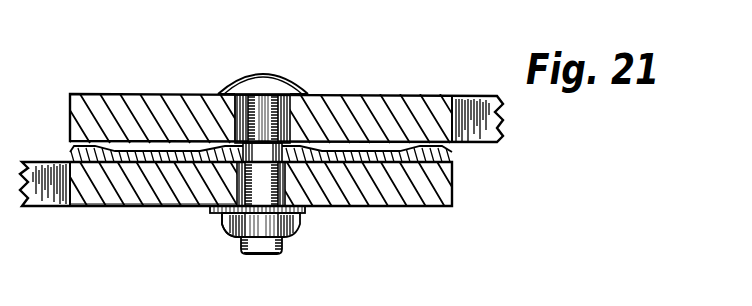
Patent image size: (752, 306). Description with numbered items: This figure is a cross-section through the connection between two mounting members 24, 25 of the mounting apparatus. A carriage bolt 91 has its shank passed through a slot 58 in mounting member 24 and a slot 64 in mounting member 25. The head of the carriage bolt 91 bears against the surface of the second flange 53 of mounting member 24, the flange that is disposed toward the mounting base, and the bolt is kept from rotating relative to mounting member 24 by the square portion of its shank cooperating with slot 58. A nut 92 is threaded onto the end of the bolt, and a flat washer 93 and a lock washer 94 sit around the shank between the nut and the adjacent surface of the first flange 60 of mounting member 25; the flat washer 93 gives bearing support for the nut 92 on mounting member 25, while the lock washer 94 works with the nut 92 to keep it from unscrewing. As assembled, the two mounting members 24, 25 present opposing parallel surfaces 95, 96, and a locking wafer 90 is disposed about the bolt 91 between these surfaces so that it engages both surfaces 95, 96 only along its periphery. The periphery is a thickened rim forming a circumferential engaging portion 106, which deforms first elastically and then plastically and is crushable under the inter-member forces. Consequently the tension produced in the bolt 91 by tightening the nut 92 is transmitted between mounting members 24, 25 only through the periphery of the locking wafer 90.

The mounting member 24 is at (412, 112).
The mounting member 25 is at (433, 208).
The second flange 53 is at (152, 106).
The slot 58 is at (250, 122).
The first flange 60 is at (152, 198).
The slot 64 is at (214, 207).
The locking wafer 90 is at (170, 146).
The carriage bolt 91 is at (290, 84).
The nut 92 is at (303, 214).
The flat washer 93 is at (226, 214).
The lock washer 94 is at (270, 244).
The opposing parallel surface 95 is at (356, 146).
The opposing parallel surface 96 is at (360, 207).
The circumferential engaging portion 106 is at (448, 153).